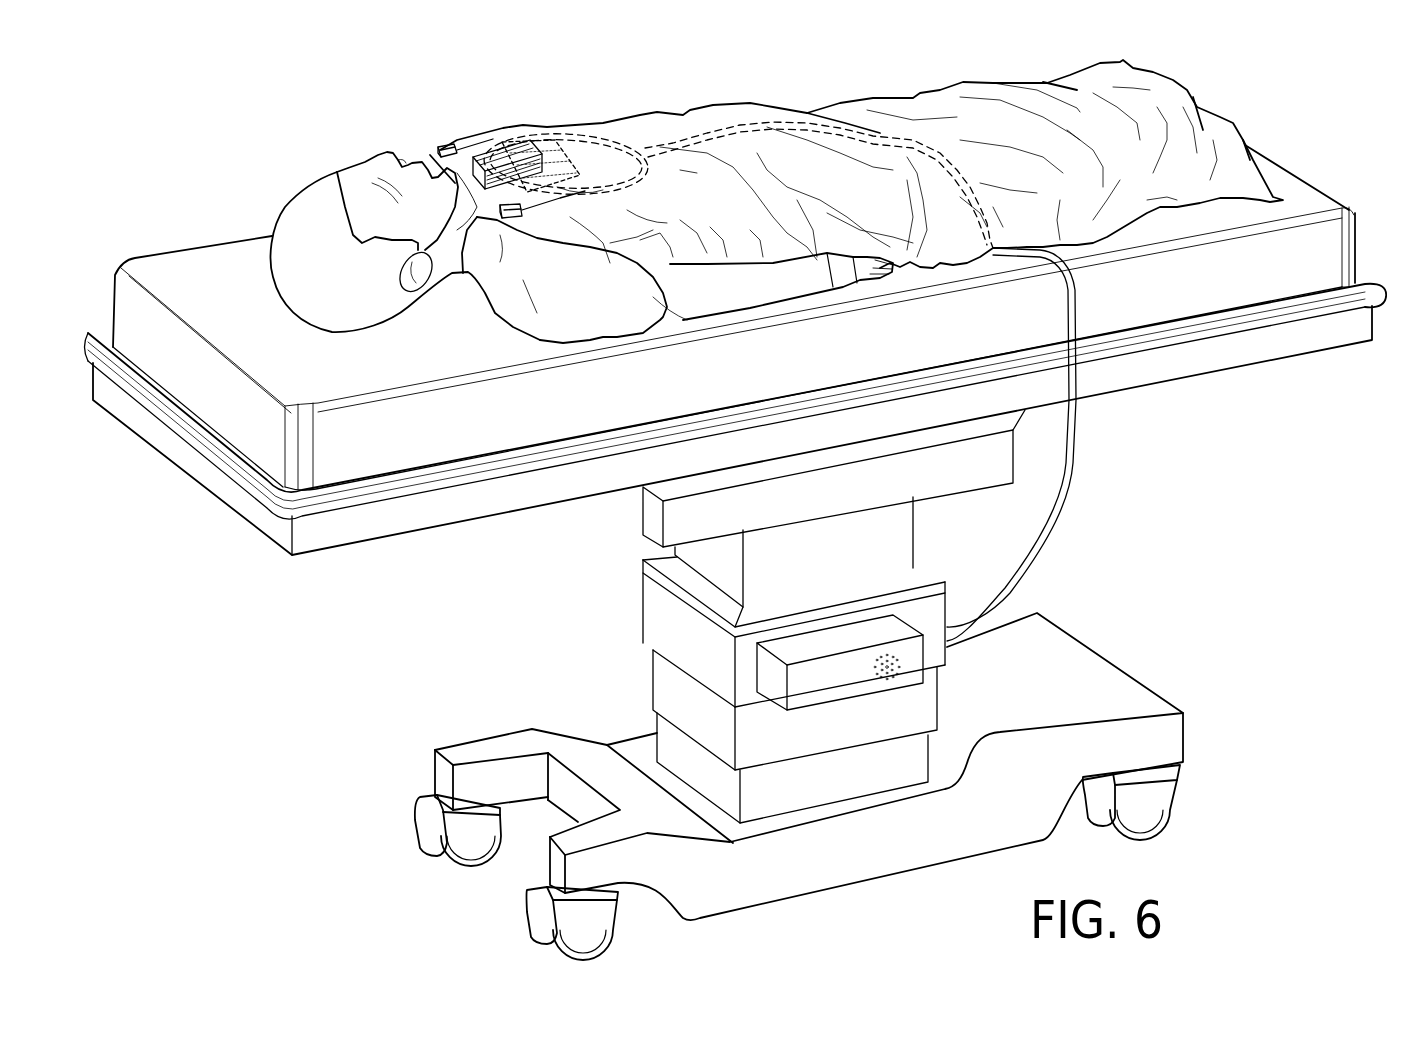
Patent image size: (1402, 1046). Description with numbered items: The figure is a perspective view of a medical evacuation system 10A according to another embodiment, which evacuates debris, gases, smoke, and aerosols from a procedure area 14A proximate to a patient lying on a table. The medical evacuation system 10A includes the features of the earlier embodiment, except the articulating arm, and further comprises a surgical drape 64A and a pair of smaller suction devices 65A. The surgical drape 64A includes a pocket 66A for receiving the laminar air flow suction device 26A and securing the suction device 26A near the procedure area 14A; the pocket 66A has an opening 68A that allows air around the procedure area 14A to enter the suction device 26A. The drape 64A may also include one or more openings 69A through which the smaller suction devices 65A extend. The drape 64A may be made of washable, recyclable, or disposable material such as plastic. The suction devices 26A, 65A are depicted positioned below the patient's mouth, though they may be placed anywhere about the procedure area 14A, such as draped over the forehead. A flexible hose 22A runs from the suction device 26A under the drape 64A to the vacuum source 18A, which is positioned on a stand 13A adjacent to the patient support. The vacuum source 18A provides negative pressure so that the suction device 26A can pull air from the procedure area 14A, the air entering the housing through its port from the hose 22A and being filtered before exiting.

The medical evacuation system 10A is at (1253, 83).
The stand 13A is at (902, 553).
The procedure area 14A is at (396, 140).
The vacuum source 18A is at (827, 692).
The flexible hose 22A is at (1070, 512).
The laminar air flow suction device 26A is at (482, 147).
The surgical drape 64A is at (863, 93).
The smaller suction devices 65A is at (437, 140).
The pocket 66A is at (567, 135).
The opening 68A is at (493, 240).
The openings 69A is at (565, 203).